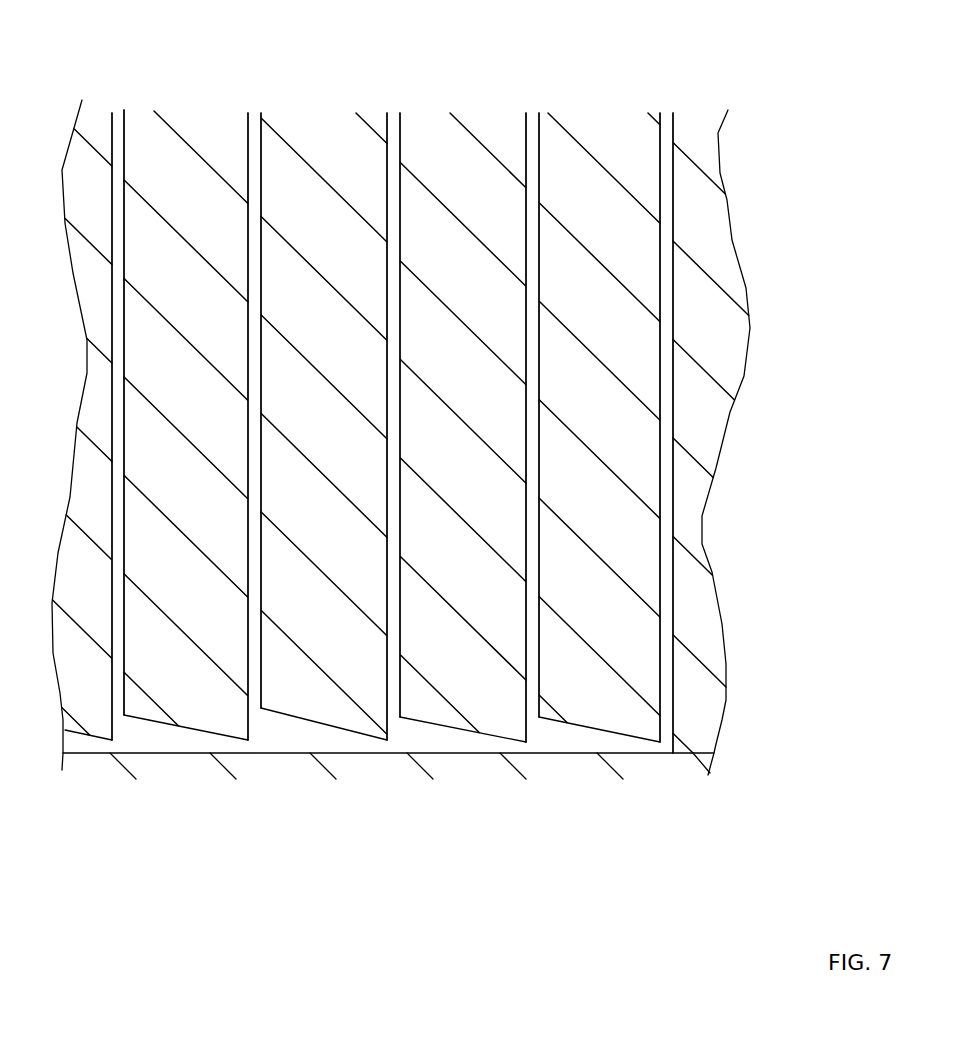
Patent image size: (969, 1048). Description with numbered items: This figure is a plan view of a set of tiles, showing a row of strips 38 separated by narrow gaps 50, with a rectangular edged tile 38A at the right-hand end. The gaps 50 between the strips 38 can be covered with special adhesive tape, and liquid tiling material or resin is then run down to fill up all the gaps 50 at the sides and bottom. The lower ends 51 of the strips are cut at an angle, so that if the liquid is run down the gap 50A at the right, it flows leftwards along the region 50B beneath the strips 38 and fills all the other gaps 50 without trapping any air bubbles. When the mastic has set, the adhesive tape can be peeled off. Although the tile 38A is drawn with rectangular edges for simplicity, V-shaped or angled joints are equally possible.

The strips 38 is at (305, 135).
The rectangular edged tile 38A is at (702, 217).
The gaps 50 is at (256, 256).
The gap 50A is at (667, 128).
The base layer below grooves 50B is at (168, 737).
The lower ends of the strips 51 is at (225, 738).